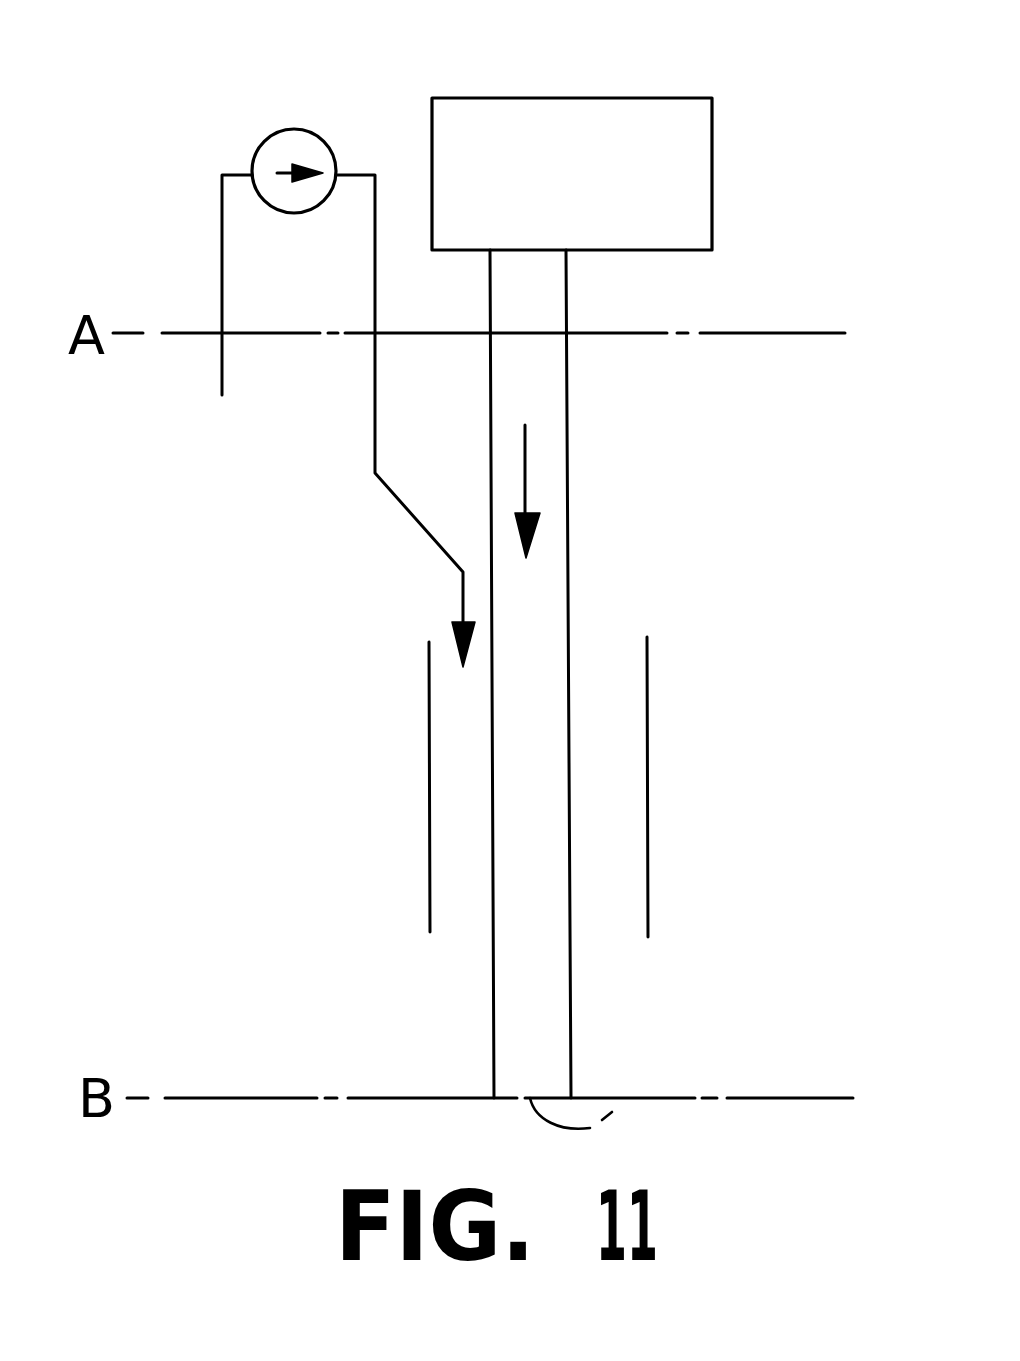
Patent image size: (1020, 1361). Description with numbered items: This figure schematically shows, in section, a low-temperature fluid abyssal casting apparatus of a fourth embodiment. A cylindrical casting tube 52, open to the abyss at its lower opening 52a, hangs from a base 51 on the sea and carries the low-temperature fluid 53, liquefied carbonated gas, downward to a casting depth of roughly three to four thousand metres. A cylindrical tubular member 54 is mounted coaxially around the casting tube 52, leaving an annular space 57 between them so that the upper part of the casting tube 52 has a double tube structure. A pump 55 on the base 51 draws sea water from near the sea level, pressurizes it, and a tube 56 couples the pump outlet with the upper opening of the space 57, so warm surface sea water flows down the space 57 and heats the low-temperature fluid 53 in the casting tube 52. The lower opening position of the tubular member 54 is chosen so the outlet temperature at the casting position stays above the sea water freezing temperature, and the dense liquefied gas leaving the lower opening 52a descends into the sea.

The base 51 is at (712, 180).
The casting tube 52 is at (567, 582).
The lower opening 52a is at (620, 1103).
The low-temperature fluid 53 is at (527, 457).
The cylindrical tubular member 54 is at (648, 788).
The pump 55 is at (295, 128).
The tube 56 is at (375, 228).
The annular space 57 is at (460, 792).